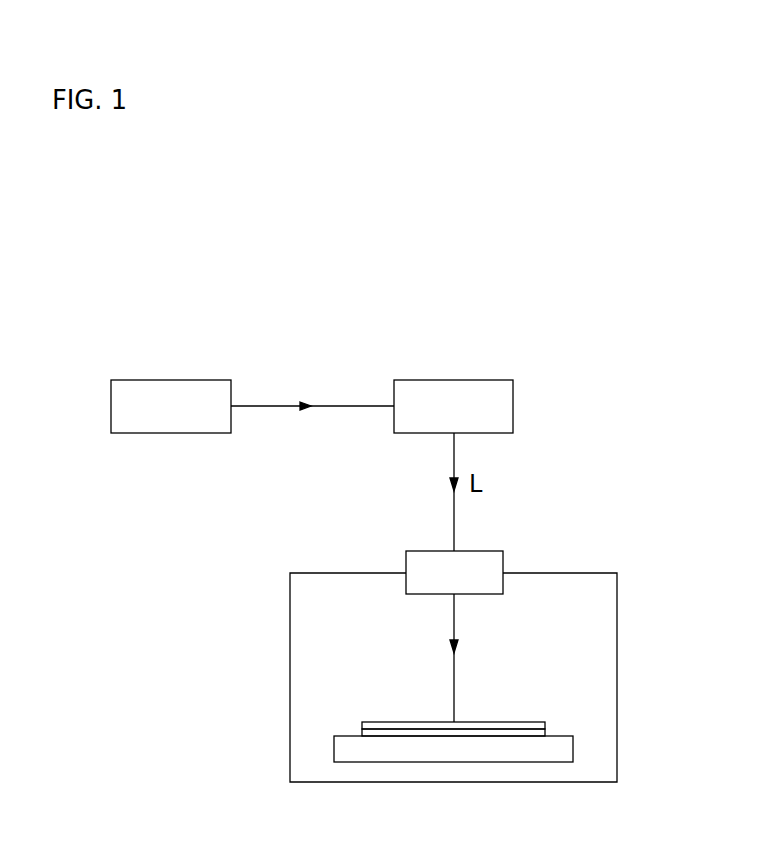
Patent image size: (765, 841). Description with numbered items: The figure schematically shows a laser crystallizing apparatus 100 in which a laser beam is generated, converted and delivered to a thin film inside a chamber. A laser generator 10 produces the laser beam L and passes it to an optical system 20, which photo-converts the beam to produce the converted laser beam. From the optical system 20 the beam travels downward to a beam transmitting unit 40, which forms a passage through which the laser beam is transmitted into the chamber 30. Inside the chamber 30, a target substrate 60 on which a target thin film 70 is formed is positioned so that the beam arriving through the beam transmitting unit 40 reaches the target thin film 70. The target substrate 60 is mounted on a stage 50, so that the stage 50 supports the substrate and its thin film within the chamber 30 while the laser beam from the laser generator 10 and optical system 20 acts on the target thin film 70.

The laser crystallizing apparatus 100 is at (382, 223).
The laser generator 10 is at (164, 380).
The optical system 20 is at (460, 380).
The chamber 30 is at (617, 612).
The beam transmitting unit 40 is at (503, 557).
The stage 50 is at (575, 745).
The target substrate 60 is at (548, 732).
The target thin film 70 is at (548, 723).